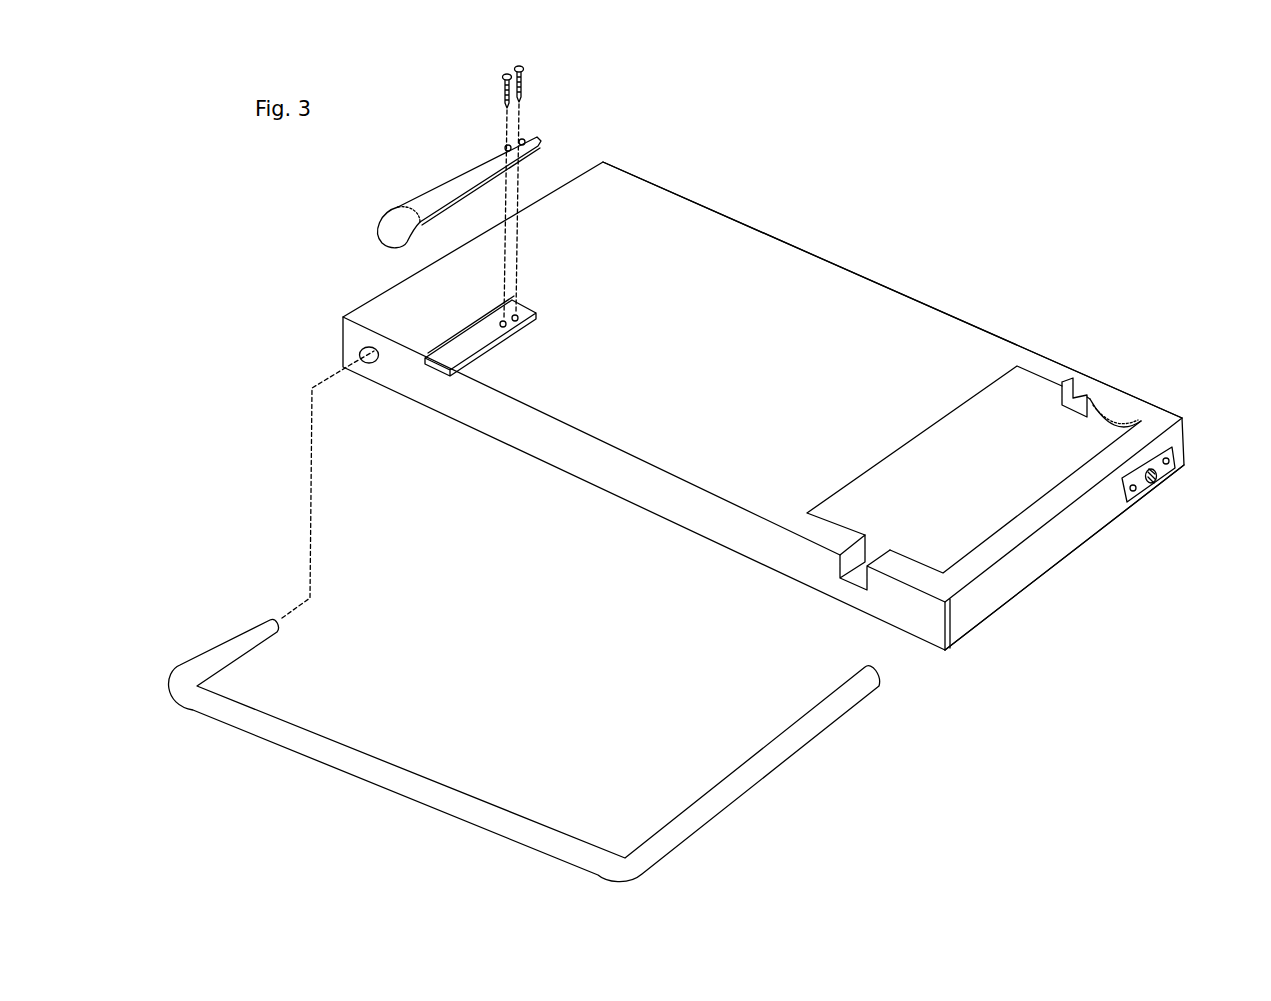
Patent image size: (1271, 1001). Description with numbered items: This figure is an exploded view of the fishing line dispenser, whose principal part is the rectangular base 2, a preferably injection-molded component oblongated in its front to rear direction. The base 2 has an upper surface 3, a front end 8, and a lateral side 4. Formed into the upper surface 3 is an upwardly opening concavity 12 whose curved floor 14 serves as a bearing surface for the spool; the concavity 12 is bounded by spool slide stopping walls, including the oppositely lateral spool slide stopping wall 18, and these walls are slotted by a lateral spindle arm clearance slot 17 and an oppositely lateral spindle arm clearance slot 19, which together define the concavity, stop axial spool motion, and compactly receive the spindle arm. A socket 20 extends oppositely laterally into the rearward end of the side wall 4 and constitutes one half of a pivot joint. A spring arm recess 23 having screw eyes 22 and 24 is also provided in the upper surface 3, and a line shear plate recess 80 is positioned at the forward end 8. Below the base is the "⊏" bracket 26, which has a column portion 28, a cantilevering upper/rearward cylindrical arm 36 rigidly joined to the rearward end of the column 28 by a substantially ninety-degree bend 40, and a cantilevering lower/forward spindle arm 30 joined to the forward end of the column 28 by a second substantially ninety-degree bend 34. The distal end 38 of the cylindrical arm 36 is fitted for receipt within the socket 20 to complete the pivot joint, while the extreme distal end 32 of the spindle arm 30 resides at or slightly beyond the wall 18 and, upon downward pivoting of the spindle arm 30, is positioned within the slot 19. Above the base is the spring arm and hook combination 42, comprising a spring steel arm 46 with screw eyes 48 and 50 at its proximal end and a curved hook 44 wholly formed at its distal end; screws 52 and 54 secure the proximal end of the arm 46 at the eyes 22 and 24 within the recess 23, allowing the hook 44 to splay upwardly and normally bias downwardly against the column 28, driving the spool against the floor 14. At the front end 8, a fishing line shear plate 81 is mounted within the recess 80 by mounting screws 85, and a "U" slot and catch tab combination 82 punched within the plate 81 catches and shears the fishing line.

The base 2 is at (833, 236).
The upper surface 3 is at (662, 240).
The lateral side 4 is at (645, 490).
The front end 8 is at (1020, 580).
The upwardly opening concavity 12 is at (1010, 470).
The floor 14 is at (972, 417).
The lateral spindle arm clearance slot 17 is at (850, 575).
The oppositely lateral spool slide stopping wall 18 is at (1137, 413).
The oppositely lateral spindle arm clearance slot 19 is at (1078, 378).
The socket 20 is at (372, 353).
The screw eye 22 is at (513, 315).
The spring arm recess 23 is at (456, 355).
The screw eye 24 is at (498, 322).
The "⊏" bracket 26 is at (538, 716).
The column portion 28 is at (273, 737).
The spindle arm 30 is at (748, 772).
The distal end of spindle arm 32 is at (882, 672).
The second substantially 90° bend 34 is at (622, 866).
The cylindrical arm 36 is at (243, 644).
The distal end of cylindrical arm 38 is at (282, 622).
The substantially 90° bend 40 is at (180, 686).
The spring arm and hook combination 42 is at (455, 169).
The curved hook 44 is at (396, 221).
The spring steel arm 46 is at (435, 193).
The screw eye 48 is at (523, 140).
The screw eye 50 is at (506, 148).
The screw 52 is at (523, 74).
The screw 54 is at (503, 86).
The line shear plate recess 80 is at (1137, 498).
The fishing line shear plate 81 is at (1152, 485).
The "U" slot and catch tab combination 82 is at (1160, 480).
The mounting screws 85 is at (1168, 462).